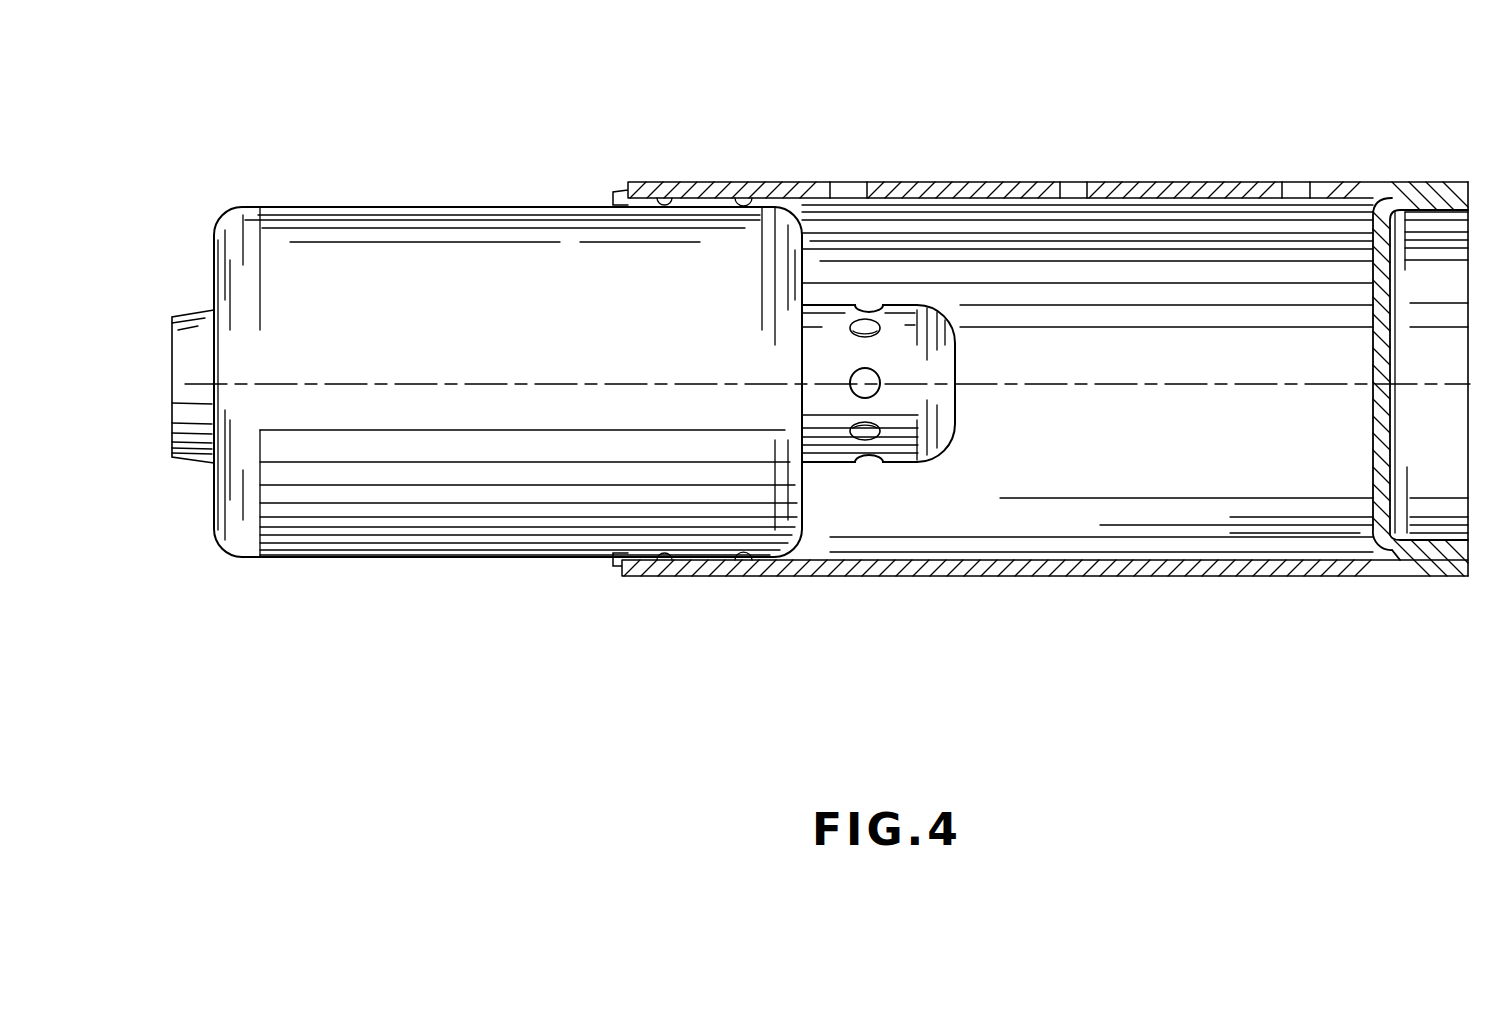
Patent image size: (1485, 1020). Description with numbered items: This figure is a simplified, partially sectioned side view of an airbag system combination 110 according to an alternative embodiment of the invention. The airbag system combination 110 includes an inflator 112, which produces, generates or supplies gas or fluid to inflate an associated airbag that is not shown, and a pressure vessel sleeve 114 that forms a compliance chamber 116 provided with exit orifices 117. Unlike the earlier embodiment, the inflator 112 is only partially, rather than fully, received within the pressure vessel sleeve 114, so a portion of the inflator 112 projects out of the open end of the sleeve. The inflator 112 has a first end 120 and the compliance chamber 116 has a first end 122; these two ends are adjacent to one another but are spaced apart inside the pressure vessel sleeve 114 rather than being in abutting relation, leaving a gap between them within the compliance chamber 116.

The airbag system combination 110 is at (932, 162).
The inflator 112 is at (488, 380).
The pressure vessel sleeve 114 is at (960, 577).
The compliance chamber 116 is at (1247, 500).
The exit orifices 117 is at (838, 183).
The first end of the inflator 120 is at (955, 350).
The first end of the compliance chamber 122 is at (1383, 413).